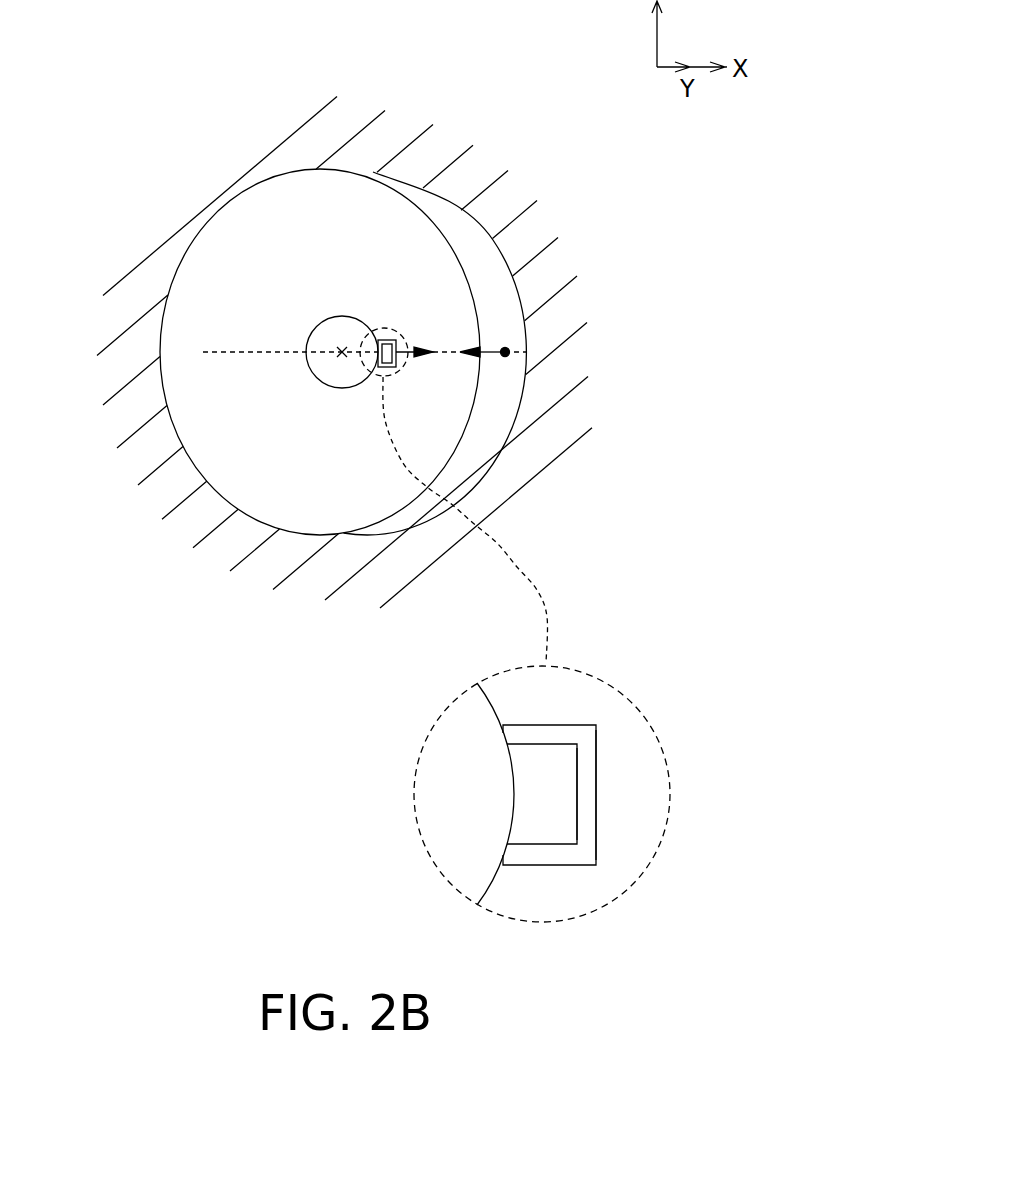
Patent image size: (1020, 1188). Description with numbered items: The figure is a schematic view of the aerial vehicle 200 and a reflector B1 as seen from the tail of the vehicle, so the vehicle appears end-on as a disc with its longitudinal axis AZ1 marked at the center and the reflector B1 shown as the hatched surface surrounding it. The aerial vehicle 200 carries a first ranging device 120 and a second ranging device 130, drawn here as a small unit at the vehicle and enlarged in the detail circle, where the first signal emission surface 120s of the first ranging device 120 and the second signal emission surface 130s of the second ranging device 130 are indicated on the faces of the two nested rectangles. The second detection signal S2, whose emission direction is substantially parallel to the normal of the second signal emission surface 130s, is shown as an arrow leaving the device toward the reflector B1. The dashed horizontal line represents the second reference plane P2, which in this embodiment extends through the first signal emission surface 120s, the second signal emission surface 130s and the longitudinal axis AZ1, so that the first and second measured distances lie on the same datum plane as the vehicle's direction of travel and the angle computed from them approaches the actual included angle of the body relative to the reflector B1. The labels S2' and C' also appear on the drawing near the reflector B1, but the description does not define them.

The reflector B1 is at (522, 303).
The second reference plane P2 is at (227, 352).
The aerial vehicle 200 is at (325, 337).
The longitudinal axis AZ1 is at (345, 349).
The second detection signal S2 is at (399, 379).
The shifted sensor position S2' is at (486, 389).
The center point C' is at (569, 387).
The first ranging device 120 is at (575, 725).
The second ranging device 130 is at (534, 744).
The first signal emission surface 120s is at (596, 794).
The second signal emission surface 130s is at (577, 827).